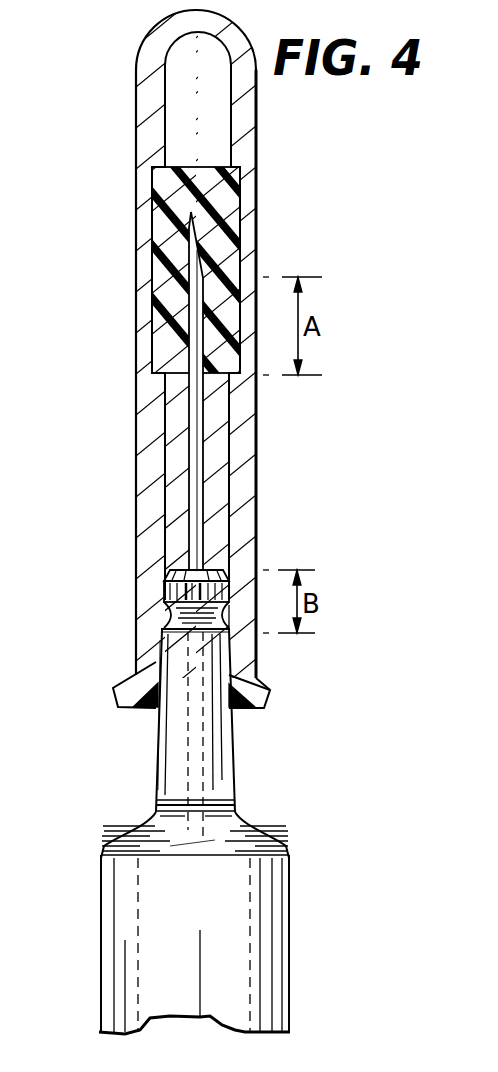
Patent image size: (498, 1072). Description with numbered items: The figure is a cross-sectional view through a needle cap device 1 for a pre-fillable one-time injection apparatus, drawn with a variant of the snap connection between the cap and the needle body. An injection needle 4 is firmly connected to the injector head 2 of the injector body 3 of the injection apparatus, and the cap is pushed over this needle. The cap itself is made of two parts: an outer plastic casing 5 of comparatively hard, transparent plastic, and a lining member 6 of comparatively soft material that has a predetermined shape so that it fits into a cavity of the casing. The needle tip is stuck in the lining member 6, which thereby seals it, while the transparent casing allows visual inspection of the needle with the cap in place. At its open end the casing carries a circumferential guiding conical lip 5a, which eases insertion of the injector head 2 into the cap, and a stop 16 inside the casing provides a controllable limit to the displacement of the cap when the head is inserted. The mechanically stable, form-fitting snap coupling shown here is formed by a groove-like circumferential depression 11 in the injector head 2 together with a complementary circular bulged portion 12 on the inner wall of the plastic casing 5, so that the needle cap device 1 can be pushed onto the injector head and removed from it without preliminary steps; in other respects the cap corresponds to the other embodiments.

The needle cap device 1 is at (104, 67).
The lining member 6 is at (162, 239).
The injection needle 4 is at (187, 437).
The outer plastic casing 5 is at (164, 592).
The stop 16 is at (168, 611).
The circular bulged portion 12 is at (163, 620).
The groove-like circumferential depression 11 is at (229, 616).
The circumferential guiding conical lip 5a is at (268, 694).
The injector head 2 is at (168, 763).
The injector body 3 is at (122, 950).